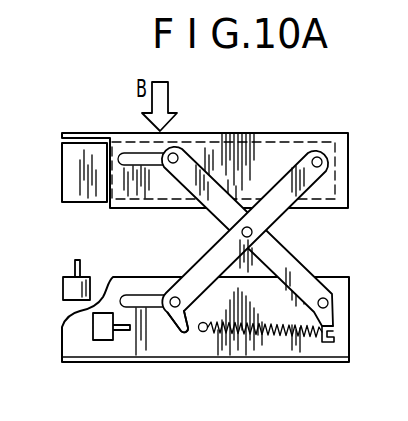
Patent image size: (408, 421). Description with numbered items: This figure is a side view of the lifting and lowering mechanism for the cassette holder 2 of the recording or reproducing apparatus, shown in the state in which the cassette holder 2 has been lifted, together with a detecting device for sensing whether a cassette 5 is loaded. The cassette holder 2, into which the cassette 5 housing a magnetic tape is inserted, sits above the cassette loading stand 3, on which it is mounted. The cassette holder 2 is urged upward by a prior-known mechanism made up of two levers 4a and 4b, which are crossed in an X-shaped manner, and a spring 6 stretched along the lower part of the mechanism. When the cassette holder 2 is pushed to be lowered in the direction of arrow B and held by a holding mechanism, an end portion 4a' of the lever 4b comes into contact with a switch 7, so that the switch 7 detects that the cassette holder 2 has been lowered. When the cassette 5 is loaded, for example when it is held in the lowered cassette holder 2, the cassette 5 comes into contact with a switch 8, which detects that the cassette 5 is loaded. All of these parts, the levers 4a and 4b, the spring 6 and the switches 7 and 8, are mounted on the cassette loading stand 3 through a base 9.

The cassette holder 2 is at (280, 132).
The cassette loading stand 3 is at (235, 362).
The lever 4a is at (247, 236).
The lever 4b is at (292, 267).
The end portion of the lever 4a' is at (174, 360).
The cassette 5 is at (64, 170).
The spring 6 is at (285, 343).
The switch 7 is at (93, 331).
The switch 8 is at (64, 290).
The base 9 is at (345, 332).